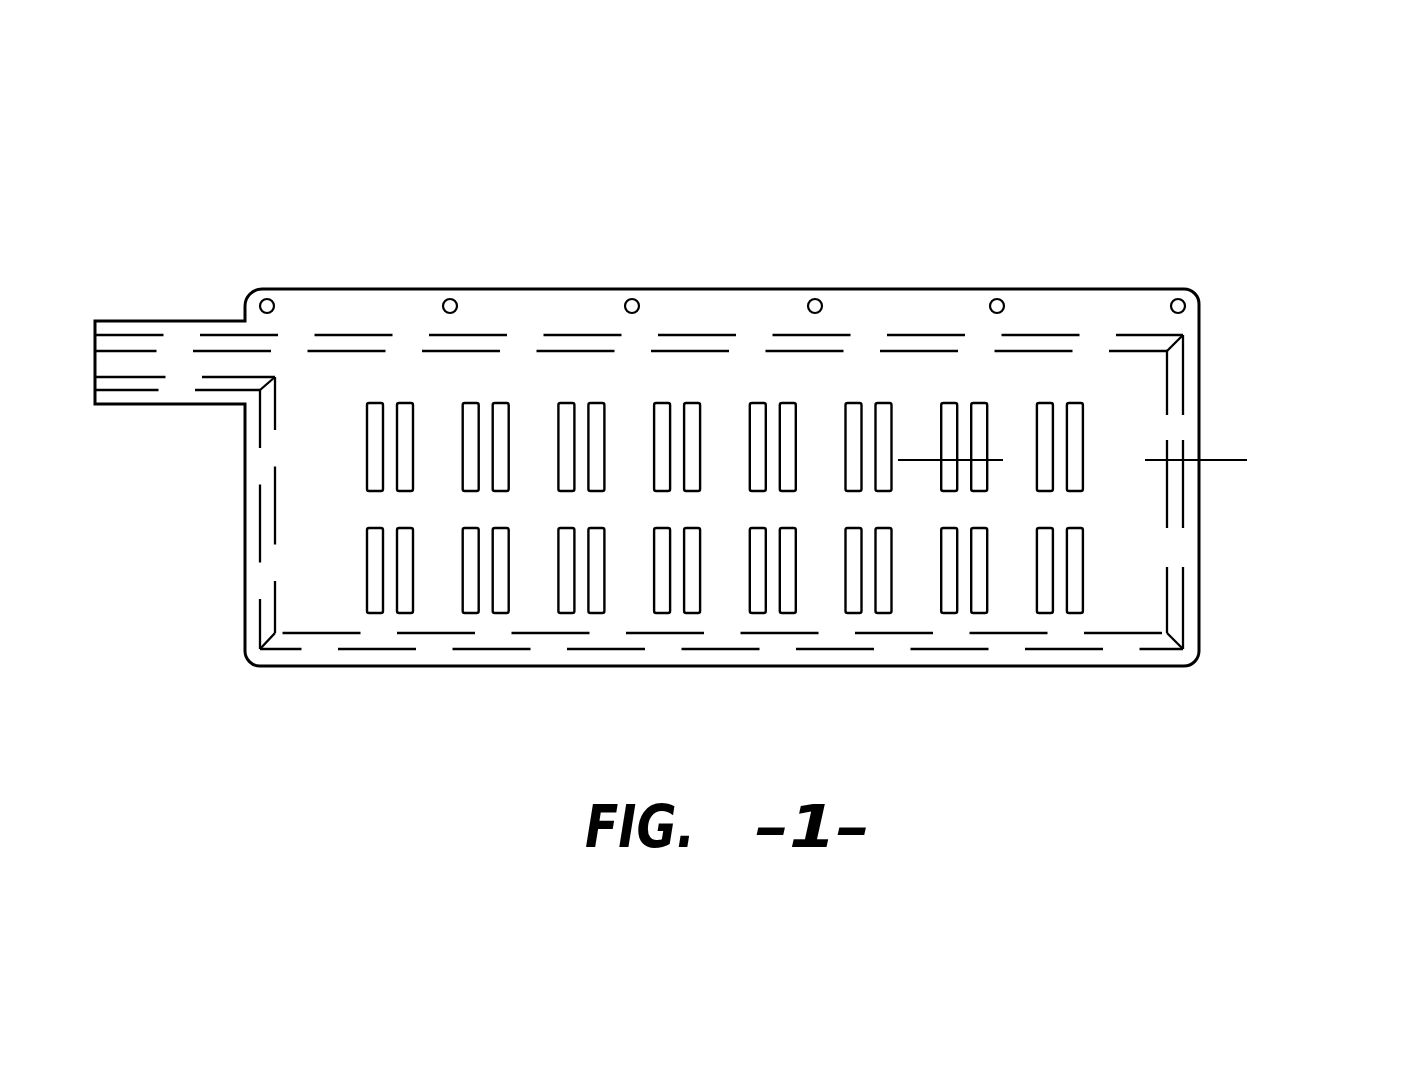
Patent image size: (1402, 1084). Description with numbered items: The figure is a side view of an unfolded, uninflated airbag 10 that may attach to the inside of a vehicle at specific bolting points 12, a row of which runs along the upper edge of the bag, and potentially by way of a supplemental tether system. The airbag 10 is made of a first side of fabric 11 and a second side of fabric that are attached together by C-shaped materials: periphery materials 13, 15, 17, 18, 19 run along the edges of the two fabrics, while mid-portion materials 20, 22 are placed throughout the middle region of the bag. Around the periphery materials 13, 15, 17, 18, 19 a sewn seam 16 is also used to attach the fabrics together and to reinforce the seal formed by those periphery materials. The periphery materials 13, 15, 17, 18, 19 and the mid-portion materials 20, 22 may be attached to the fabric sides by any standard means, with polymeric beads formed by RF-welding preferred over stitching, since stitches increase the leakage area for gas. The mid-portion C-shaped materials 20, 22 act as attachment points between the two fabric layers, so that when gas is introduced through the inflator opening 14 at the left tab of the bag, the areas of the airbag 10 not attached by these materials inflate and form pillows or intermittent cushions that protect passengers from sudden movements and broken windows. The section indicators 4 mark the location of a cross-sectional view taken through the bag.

The airbag 10 is at (1300, 236).
The first side of fabric 11 is at (313, 307).
The bolting points 12 is at (265, 292).
The periphery C-shaped material 13 is at (155, 390).
The inflator opening 14 is at (92, 362).
The periphery C-shaped material 15 is at (260, 588).
The sewn seam 16 is at (157, 328).
The periphery C-shaped material 17 is at (897, 648).
The periphery C-shaped material 18 is at (372, 338).
The periphery C-shaped material 19 is at (1186, 365).
The mid-portion C-shaped material 20 is at (313, 648).
The mid-portion C-shaped material 22 is at (335, 618).
The section line 4- 4 is at (916, 442).